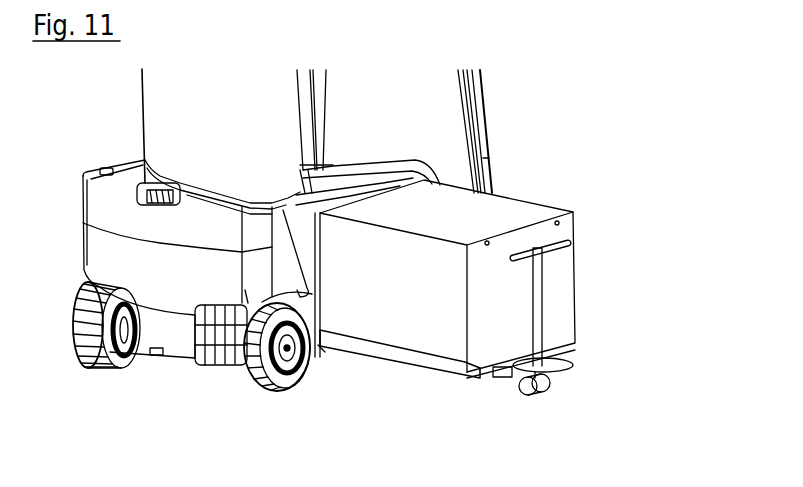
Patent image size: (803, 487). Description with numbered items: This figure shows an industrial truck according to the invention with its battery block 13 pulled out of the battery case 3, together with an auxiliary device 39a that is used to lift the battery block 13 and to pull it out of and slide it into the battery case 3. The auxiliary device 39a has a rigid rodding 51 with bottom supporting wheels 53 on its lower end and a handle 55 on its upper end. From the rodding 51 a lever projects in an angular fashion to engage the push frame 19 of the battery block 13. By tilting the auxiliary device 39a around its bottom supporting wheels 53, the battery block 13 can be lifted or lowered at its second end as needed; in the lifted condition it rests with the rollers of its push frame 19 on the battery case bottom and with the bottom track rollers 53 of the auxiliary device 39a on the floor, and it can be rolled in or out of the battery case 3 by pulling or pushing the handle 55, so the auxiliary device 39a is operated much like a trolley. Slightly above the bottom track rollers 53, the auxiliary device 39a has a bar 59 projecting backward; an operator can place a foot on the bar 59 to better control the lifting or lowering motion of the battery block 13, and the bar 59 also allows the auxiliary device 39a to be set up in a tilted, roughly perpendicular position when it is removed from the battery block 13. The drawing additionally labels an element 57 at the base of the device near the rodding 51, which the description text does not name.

The battery case 3 is at (347, 187).
The battery block 13 is at (384, 303).
The push frame 19 is at (430, 363).
The auxiliary device 39a is at (540, 312).
The rigid rodding 51 is at (548, 277).
The bottom supporting wheels 53 is at (530, 400).
The handle 55 is at (560, 242).
The bracket 57 is at (495, 376).
The bar 59 is at (573, 367).